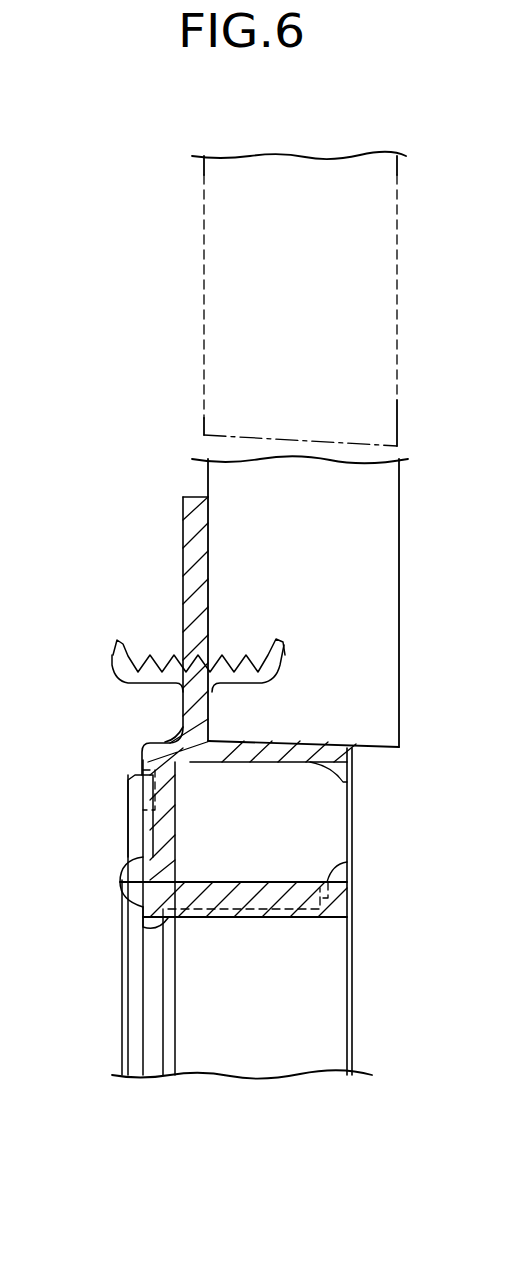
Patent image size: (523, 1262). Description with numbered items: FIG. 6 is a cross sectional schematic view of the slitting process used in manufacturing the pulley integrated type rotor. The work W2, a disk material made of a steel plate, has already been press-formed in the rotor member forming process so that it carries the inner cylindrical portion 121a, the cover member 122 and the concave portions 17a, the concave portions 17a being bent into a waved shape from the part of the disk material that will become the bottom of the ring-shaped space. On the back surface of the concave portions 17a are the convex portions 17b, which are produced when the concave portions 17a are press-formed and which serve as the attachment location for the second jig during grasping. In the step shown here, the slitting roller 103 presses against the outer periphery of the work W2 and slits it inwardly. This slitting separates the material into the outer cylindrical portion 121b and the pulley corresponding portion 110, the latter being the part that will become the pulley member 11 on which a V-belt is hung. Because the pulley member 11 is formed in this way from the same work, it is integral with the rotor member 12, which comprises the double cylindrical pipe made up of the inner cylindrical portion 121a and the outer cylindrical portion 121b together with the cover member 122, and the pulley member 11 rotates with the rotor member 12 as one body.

The slitting roller 103 is at (392, 331).
The pulley corresponding portion 110 is at (183, 526).
The work W2 is at (183, 560).
The pulley member 11 is at (113, 647).
The rotor member 12 is at (157, 736).
The outer cylindrical portion 121b is at (349, 782).
The inner cylindrical portion 121a is at (352, 862).
The cover member 122 is at (143, 1010).
The convex portions 17b is at (128, 790).
The concave portions 17a is at (140, 810).